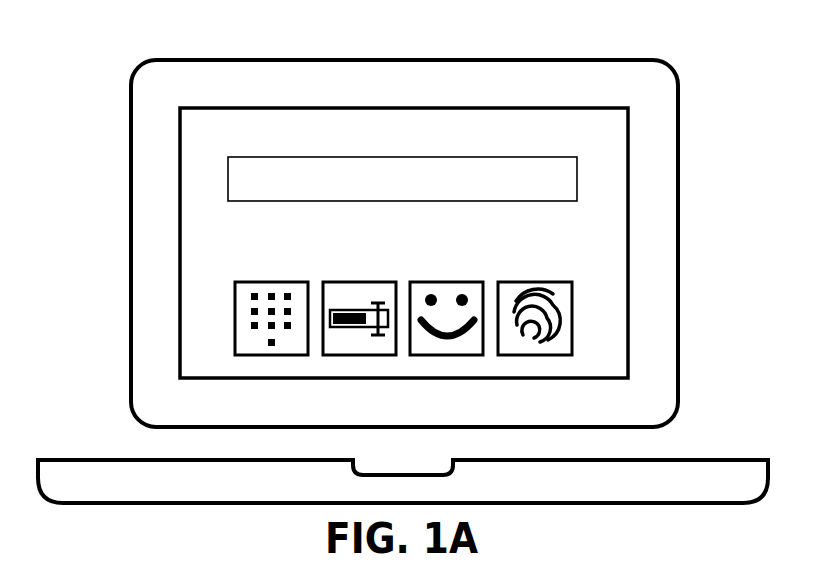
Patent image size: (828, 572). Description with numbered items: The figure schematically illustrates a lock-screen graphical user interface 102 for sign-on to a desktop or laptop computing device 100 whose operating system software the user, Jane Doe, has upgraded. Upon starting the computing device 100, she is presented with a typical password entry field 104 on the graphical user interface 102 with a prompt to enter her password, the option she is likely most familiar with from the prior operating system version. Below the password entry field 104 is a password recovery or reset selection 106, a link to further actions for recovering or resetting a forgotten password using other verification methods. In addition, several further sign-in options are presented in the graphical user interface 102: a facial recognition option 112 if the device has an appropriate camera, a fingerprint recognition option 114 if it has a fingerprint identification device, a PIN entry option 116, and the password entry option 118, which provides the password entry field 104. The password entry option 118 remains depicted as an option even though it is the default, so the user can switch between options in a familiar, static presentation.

The computing device 100 is at (670, 73).
The graphical user interface 102 is at (641, 238).
The password entry field 104 is at (577, 178).
The password recovery or reset selection 106 is at (278, 229).
The facial recognition option 112 is at (450, 355).
The fingerprint recognition option 114 is at (572, 305).
The PIN entry option 116 is at (235, 325).
The password entry option 118 is at (360, 357).